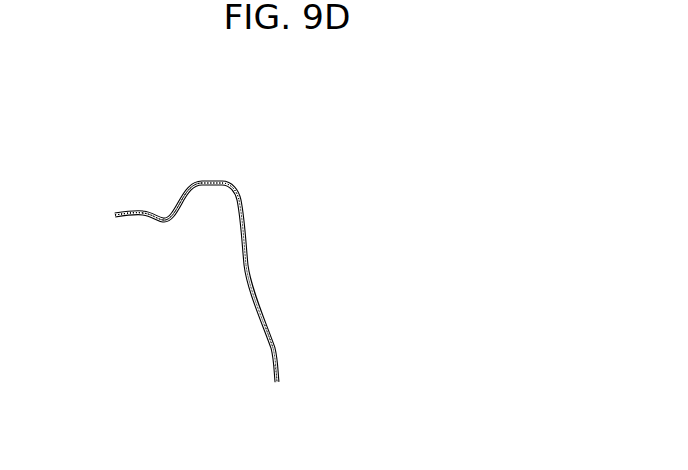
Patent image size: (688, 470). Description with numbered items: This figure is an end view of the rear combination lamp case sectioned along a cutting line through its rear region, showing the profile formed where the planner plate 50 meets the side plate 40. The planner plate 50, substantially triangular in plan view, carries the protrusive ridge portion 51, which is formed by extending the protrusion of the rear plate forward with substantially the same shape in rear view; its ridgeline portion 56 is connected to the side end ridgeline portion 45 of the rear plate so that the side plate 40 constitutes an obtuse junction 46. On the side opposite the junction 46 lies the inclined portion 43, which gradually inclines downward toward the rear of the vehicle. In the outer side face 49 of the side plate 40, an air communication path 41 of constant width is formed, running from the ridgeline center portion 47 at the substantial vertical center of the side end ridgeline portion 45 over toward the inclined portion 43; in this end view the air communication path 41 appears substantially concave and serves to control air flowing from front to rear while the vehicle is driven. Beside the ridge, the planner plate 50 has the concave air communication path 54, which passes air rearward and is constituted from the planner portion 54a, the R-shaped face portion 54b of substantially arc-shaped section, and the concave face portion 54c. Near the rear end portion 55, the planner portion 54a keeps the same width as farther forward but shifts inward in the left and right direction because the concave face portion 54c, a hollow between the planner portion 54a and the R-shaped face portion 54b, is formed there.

The side plate 40 is at (344, 256).
The air communication path 41 is at (273, 272).
The inclined portion 43 is at (277, 383).
The side end ridgeline portion 45 is at (275, 348).
The obtuse junction 46 is at (229, 181).
The ridgeline center portion 47 is at (253, 295).
The outer side face 49 is at (258, 218).
The planner plate 50 is at (149, 142).
The protrusive ridge portion 51 is at (192, 164).
The concave air communication path 54 is at (88, 137).
The planner portion 54a is at (118, 212).
The R-shaped face portion 54b is at (167, 197).
The concave face portion 54c is at (164, 217).
The rear end portion 55 is at (104, 223).
The ridgeline portion 56 is at (222, 181).